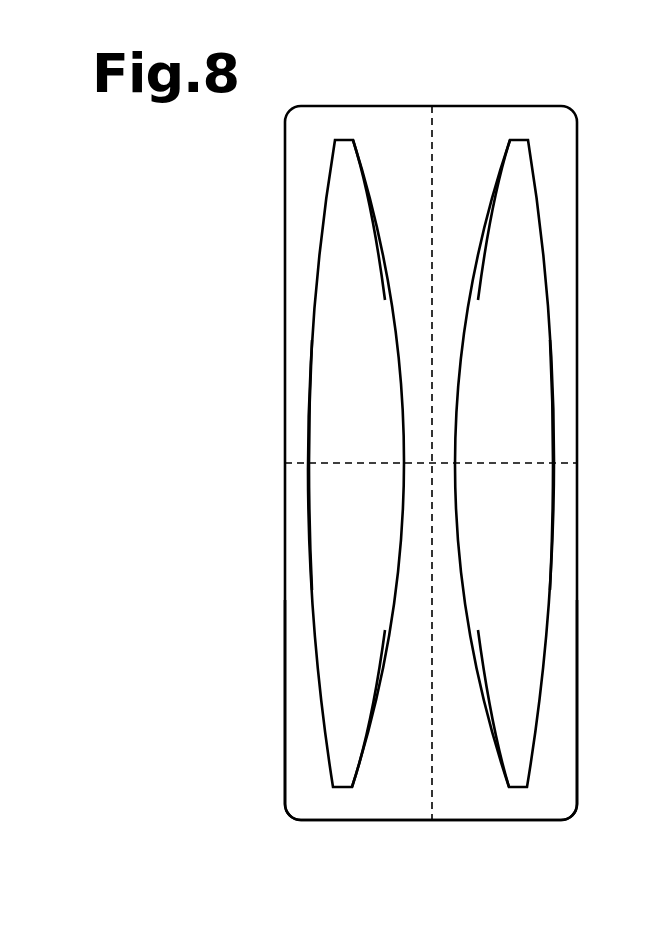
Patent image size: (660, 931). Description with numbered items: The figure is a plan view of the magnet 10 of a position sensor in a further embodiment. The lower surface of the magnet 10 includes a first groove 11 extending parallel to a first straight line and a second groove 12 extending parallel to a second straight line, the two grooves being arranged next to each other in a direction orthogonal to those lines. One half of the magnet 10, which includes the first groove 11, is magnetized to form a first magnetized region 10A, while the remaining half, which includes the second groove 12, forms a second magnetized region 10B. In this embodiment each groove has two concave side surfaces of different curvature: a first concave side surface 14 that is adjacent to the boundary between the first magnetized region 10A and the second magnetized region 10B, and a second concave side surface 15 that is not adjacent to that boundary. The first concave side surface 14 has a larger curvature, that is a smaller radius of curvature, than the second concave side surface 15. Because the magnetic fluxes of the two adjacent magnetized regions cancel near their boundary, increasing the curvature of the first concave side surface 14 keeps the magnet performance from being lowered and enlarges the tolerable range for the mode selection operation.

The magnet 10 is at (481, 80).
The first magnetized region 10A is at (357, 822).
The second magnetized region 10B is at (500, 822).
The first groove 11 is at (338, 427).
The second groove 12 is at (523, 427).
The first concave side surface 14 is at (362, 177).
The second concave side surface 15 is at (309, 351).